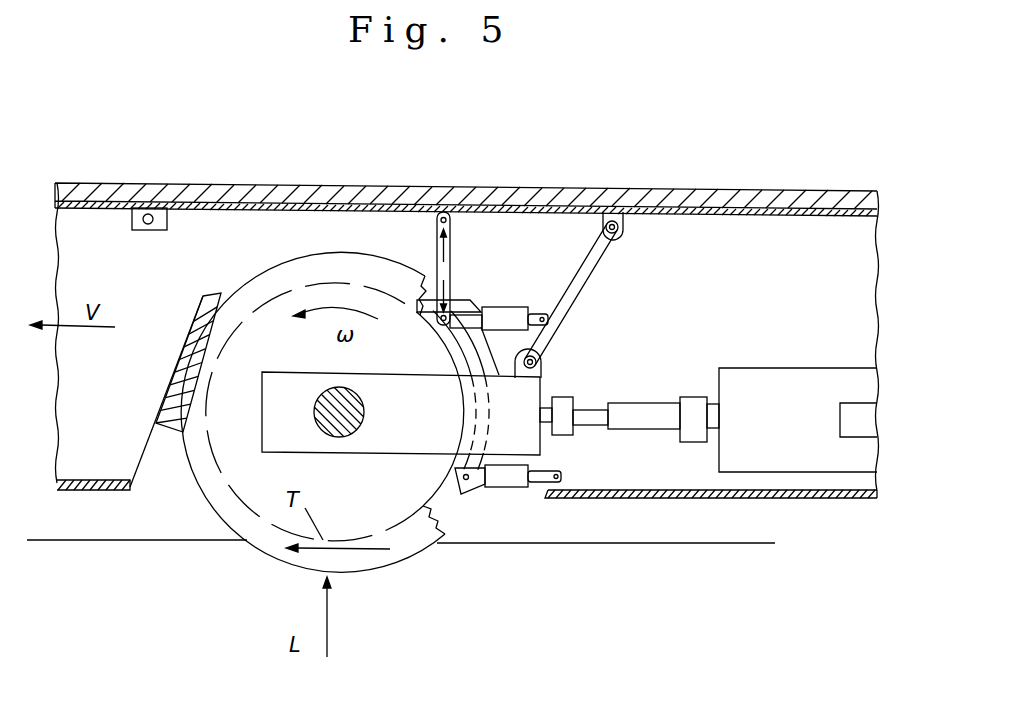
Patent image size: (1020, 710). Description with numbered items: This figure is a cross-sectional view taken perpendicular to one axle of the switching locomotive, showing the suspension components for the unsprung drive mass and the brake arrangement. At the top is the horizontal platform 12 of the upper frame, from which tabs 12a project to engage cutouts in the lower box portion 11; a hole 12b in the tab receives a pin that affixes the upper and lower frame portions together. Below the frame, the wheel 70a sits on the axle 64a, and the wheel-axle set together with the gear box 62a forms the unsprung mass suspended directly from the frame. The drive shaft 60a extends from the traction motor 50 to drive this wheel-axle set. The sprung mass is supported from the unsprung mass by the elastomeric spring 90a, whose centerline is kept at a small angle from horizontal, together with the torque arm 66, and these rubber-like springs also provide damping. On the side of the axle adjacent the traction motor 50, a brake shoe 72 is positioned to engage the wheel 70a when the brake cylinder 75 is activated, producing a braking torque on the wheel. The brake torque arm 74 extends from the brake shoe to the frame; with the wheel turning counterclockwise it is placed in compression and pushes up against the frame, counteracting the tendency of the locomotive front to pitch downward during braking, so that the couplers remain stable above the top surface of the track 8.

The horizontal platform 12 is at (827, 190).
The tab 12a is at (165, 207).
The bracket hole 12b is at (145, 213).
The box portion 11 is at (788, 212).
The brake torque arm 74 is at (435, 252).
The torque arm 66 is at (583, 267).
The brake cylinder 75 is at (507, 308).
The brake shoe 72 is at (493, 490).
The elastomeric spring 90a is at (492, 350).
The wheel 70a is at (273, 557).
The gear box 62a is at (390, 452).
The axle 64a is at (345, 437).
The drive shaft 60a is at (657, 430).
The traction motor 50 is at (750, 472).
The track 8 is at (662, 545).